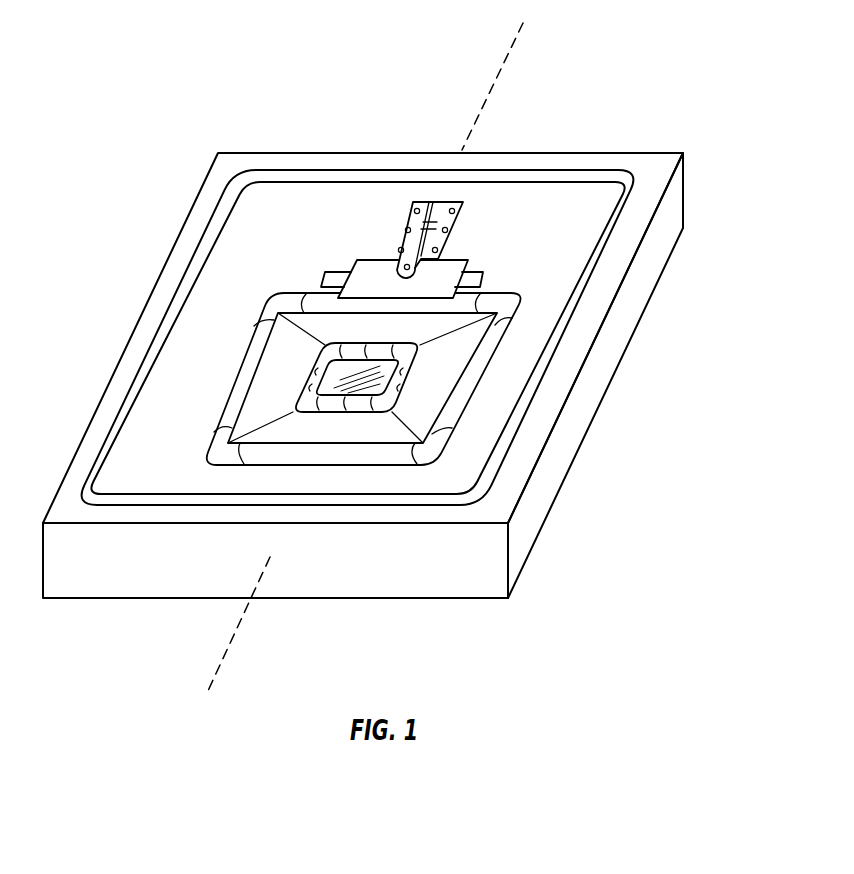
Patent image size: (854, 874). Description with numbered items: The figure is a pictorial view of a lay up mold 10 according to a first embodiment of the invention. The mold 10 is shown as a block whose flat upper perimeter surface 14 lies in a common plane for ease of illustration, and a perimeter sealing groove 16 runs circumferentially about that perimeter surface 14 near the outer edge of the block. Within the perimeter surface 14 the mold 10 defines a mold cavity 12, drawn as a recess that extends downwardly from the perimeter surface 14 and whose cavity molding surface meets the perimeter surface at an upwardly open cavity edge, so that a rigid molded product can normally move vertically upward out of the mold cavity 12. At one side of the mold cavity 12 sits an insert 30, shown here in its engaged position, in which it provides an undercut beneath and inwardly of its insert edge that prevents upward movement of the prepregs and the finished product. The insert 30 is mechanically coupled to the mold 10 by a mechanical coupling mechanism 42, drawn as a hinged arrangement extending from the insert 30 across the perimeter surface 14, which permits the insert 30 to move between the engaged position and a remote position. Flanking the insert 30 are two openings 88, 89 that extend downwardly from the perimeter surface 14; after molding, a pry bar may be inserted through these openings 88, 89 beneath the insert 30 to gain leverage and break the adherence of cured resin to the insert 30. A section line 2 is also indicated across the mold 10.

The lay up mold 10 is at (360, 315).
The mold cavity 12 is at (273, 373).
The perimeter surface 14 is at (152, 413).
The perimeter sealing groove 16 is at (108, 448).
The insert 30 is at (395, 260).
The mechanical coupling mechanism 42 is at (458, 240).
The opening 88 is at (323, 280).
The opening 89 is at (483, 280).
The section line 2 is at (162, 693).